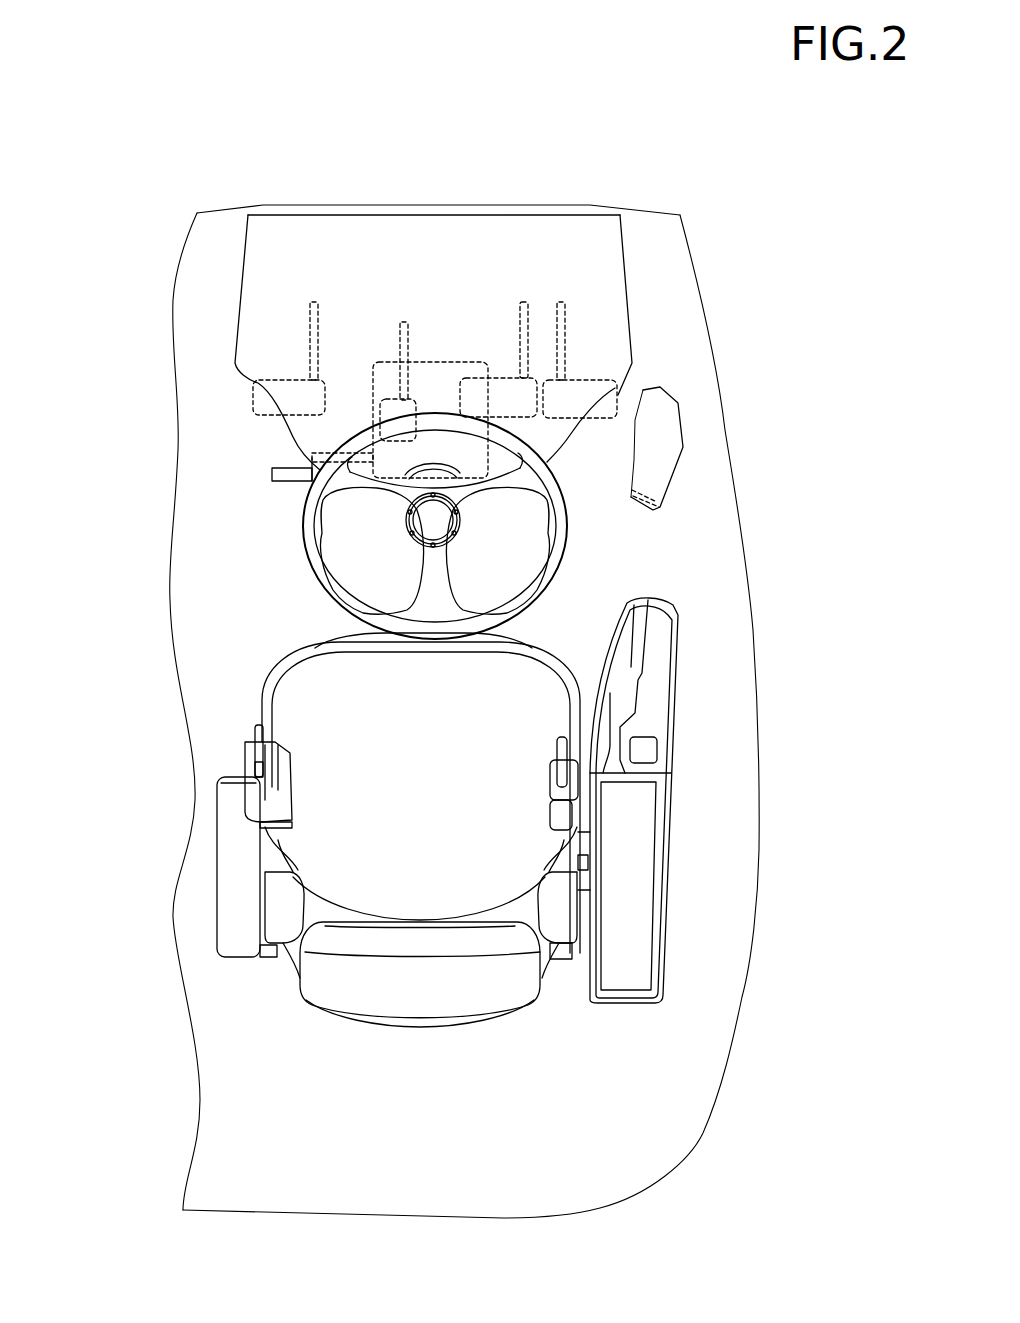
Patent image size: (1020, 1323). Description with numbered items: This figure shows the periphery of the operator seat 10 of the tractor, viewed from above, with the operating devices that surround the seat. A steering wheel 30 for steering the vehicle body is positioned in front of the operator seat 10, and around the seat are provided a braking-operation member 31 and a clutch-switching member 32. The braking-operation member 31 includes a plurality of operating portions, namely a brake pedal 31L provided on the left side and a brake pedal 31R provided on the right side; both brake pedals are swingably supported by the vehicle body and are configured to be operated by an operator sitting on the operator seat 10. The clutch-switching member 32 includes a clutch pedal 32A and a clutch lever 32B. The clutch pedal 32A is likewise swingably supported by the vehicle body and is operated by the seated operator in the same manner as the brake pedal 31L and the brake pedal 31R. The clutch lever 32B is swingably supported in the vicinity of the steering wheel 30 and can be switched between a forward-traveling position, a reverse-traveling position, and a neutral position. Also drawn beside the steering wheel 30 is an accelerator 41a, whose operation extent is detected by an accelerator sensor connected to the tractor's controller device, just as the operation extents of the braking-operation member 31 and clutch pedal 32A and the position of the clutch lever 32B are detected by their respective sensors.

The operator seat 10 is at (258, 676).
The steering wheel 30 is at (313, 567).
The braking-operation member 31 is at (800, 272).
The brake pedal 31L is at (523, 377).
The brake pedal 31R is at (620, 395).
The clutch-switching member 32 is at (80, 378).
The clutch pedal 32A is at (253, 395).
The clutch lever 32B is at (272, 474).
The accelerator 41a is at (663, 423).